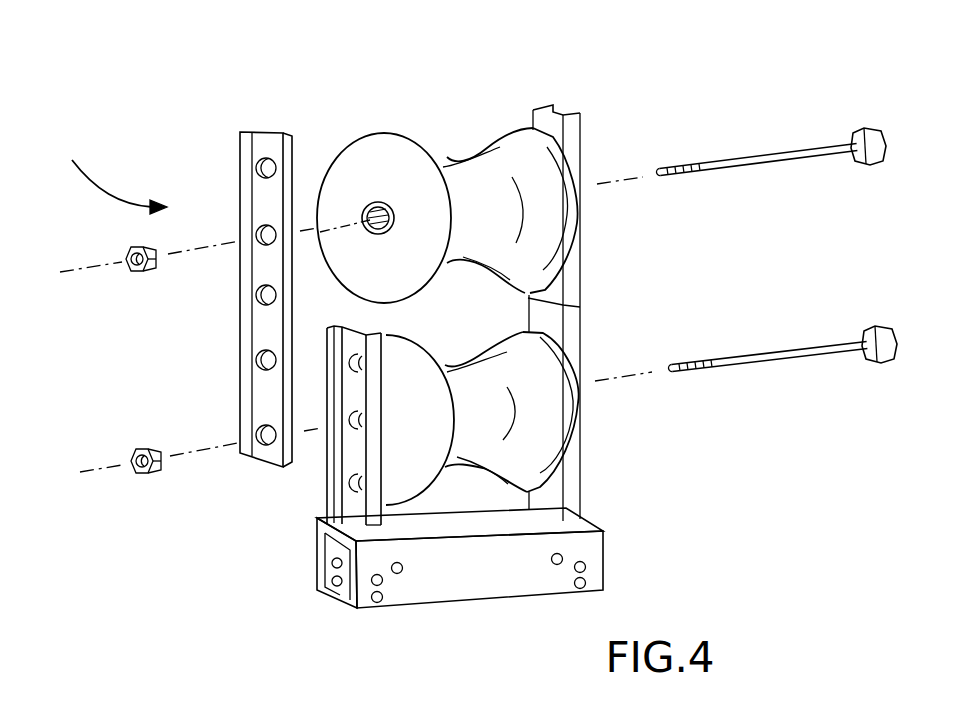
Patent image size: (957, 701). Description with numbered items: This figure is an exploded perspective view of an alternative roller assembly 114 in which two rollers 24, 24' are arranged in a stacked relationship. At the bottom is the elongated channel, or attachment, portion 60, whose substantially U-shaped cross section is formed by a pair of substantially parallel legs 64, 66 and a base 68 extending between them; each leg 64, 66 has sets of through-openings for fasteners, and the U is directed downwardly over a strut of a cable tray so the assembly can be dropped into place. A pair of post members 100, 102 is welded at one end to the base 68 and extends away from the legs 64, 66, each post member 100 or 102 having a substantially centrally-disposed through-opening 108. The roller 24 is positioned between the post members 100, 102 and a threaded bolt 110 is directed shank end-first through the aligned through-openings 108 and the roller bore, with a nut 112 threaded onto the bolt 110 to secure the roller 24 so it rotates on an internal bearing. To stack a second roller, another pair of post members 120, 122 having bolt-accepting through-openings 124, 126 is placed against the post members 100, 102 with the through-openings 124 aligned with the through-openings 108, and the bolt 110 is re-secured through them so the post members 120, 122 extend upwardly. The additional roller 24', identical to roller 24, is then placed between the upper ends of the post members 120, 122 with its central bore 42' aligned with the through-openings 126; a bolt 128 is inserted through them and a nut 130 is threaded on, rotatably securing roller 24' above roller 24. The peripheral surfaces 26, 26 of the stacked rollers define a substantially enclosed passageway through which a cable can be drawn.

The roller assembly 114 is at (94, 177).
The post member 120 is at (243, 183).
The through-openings 126 is at (257, 241).
The through-openings 124 is at (262, 432).
The nut 130 is at (122, 265).
The nut 112 is at (163, 473).
The roller 24' is at (499, 215).
The central bore 42' is at (355, 150).
The peripheral surface 26 is at (487, 147).
The roller 24 is at (546, 418).
The post member 122 is at (582, 128).
The post member 102 is at (580, 486).
The post member 100 is at (320, 503).
The through-opening 108 is at (348, 428).
The attachment portion 60 is at (607, 558).
The base 68 is at (497, 518).
The leg 64 is at (520, 590).
The leg 66 is at (317, 567).
The bolt 128 is at (772, 150).
The threaded bolt 110 is at (817, 342).